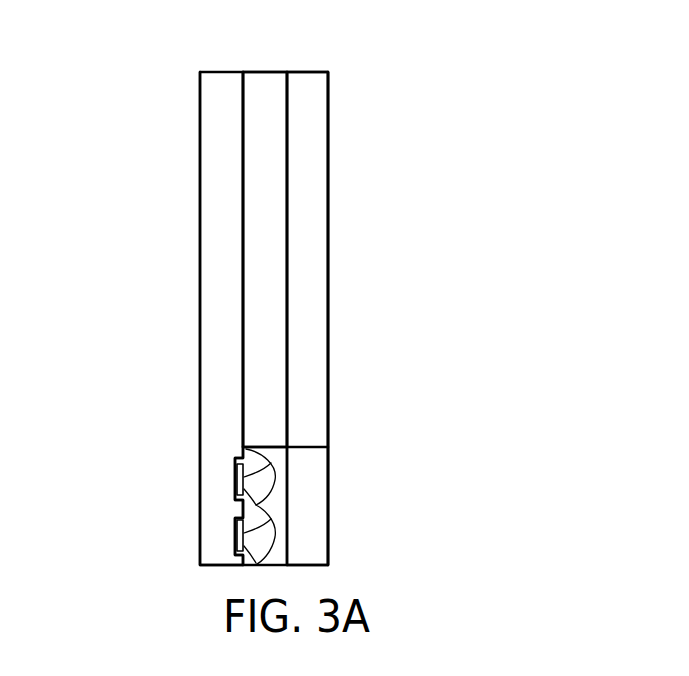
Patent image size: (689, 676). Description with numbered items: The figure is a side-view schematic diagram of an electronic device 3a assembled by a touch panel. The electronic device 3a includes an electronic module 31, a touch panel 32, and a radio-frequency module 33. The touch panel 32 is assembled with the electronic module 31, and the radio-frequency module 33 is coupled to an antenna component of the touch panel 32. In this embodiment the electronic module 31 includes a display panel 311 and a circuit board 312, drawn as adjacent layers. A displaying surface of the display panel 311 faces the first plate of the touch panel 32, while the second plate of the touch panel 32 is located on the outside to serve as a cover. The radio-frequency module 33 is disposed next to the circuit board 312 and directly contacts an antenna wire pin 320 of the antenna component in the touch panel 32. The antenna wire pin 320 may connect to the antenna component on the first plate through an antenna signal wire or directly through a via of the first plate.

The electronic device 3a is at (134, 73).
The electronic module 31 is at (458, 59).
The display panel 311 is at (267, 80).
The circuit board 312 is at (322, 135).
The touch panel 32 is at (205, 186).
The radio-frequency module 33 is at (320, 483).
The antenna wire pin 320 is at (235, 521).